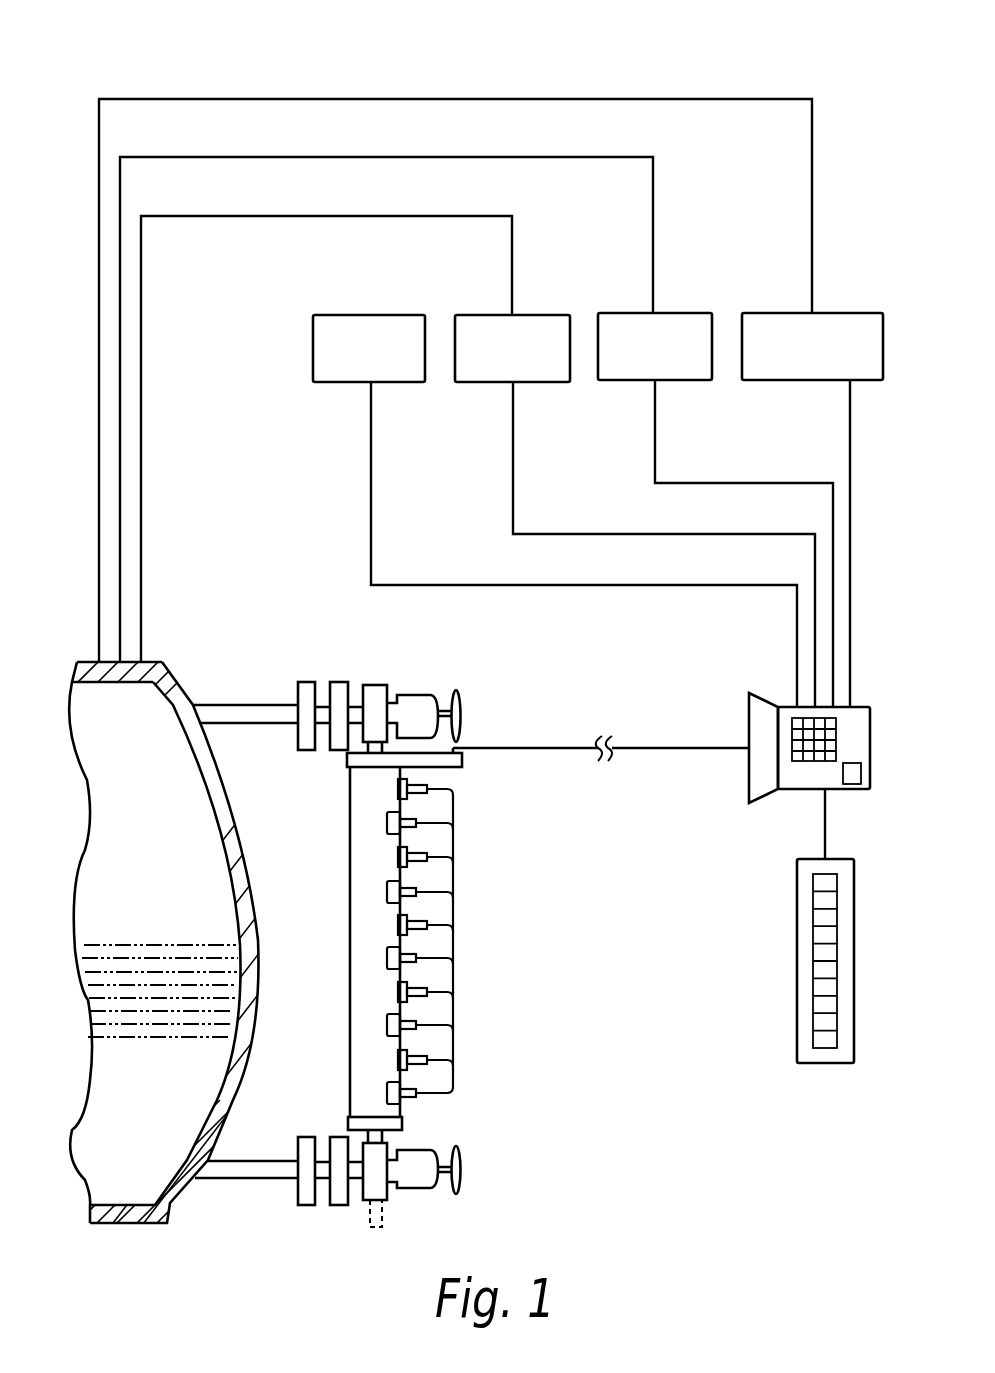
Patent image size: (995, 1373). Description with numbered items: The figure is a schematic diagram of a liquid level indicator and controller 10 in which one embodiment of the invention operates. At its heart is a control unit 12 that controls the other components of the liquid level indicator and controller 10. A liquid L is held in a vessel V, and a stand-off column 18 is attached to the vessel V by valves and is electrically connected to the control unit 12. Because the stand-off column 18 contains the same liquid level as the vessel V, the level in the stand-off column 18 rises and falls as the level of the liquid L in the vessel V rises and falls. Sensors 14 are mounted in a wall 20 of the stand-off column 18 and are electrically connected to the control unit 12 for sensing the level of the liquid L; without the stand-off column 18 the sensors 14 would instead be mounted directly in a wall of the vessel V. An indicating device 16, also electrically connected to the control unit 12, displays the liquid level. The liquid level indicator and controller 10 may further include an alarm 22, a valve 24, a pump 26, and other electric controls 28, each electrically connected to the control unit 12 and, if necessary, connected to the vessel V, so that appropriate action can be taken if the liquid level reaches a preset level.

The liquid level indicator and controller 10 is at (248, 58).
The control unit 12 is at (748, 715).
The sensors 14 is at (425, 797).
The indicating device 16 is at (797, 963).
The stand-off column 18 is at (390, 954).
The wall 20 is at (368, 903).
The alarm 22 is at (313, 350).
The valve 24 is at (480, 313).
The pump 26 is at (623, 313).
The electric controls 28 is at (766, 313).
The vessel V is at (183, 683).
The liquid L is at (155, 945).